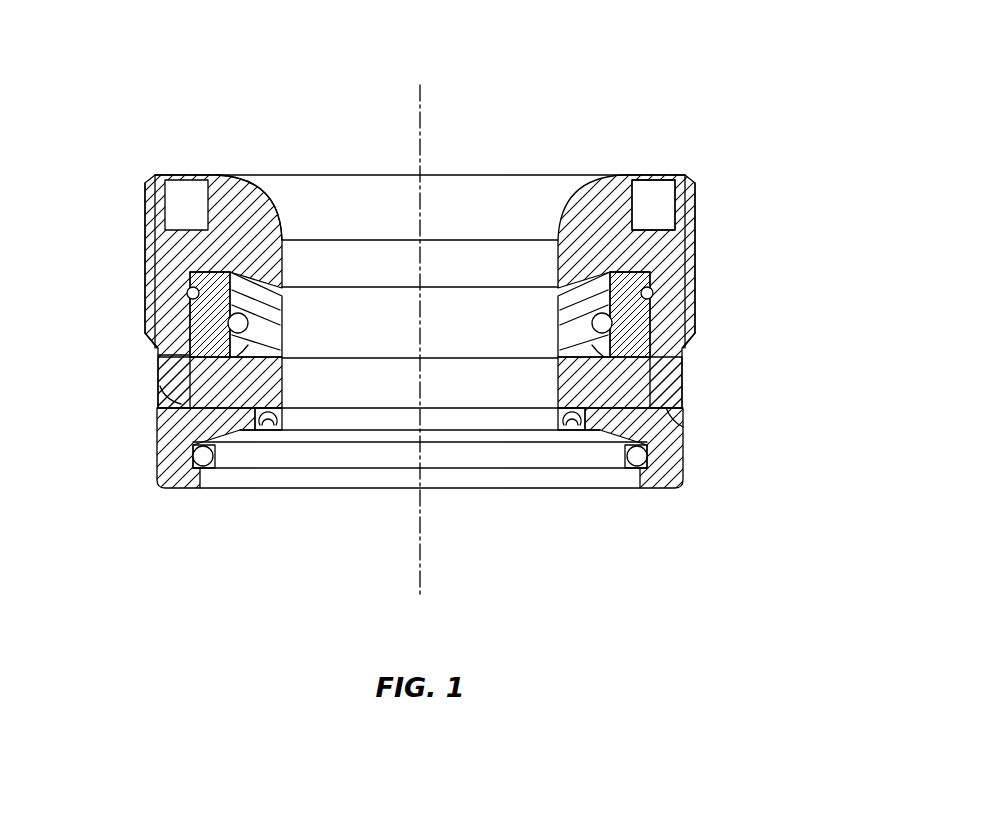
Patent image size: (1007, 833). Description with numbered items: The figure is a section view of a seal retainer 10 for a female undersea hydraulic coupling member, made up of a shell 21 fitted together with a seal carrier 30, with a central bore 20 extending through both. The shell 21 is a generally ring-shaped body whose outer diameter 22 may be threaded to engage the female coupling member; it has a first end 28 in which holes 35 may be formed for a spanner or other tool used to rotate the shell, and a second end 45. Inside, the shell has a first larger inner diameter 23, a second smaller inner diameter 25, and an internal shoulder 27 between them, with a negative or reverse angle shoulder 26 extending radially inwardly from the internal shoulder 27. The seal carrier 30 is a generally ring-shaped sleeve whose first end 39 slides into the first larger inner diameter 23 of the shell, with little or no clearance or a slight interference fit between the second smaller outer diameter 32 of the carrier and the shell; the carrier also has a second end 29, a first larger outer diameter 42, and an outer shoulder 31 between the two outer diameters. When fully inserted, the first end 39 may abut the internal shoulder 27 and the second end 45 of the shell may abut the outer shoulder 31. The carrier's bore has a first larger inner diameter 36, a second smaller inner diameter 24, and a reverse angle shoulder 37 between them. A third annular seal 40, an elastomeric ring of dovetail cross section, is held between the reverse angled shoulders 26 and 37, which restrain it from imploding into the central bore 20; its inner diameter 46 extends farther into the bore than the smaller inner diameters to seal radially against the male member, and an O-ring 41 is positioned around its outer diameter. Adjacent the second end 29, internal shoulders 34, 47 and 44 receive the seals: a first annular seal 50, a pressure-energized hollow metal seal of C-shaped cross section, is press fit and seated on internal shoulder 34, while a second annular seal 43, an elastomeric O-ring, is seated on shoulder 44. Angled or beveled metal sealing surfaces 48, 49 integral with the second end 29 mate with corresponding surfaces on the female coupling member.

The seal retainer 10 is at (711, 60).
The central bore 20 is at (441, 183).
The shell 21 is at (680, 242).
The outer diameter 22 is at (692, 203).
The first larger inner diameter 23 is at (650, 283).
The second smaller inner diameter 24 is at (560, 370).
The second smaller inner diameter 25 is at (560, 243).
The reverse angle shoulder 26 is at (283, 314).
The internal shoulder 27 is at (197, 285).
The first end 28 is at (614, 174).
The second end 29 is at (667, 490).
The seal carrier 30 is at (157, 427).
The outer shoulder 31 is at (160, 390).
The second smaller outer diameter 32 is at (155, 335).
The internal shoulder 34 is at (553, 420).
The holes 35 is at (662, 190).
The first larger inner diameter 36 is at (600, 325).
The reverse angle shoulder 37 is at (158, 355).
The first end 39 is at (200, 268).
The third annular seal 40 is at (282, 292).
The O-ring 41 is at (590, 320).
The first larger outer diameter 42 is at (687, 461).
The second annular seal 43 is at (200, 460).
The shoulder 44 is at (162, 470).
The second end 45 is at (688, 432).
The inner diameter 46 is at (283, 322).
The internal shoulder 47 is at (242, 435).
The metal sealing surface 48 is at (635, 468).
The metal sealing surface 49 is at (613, 438).
The first annular seal 50 is at (287, 420).